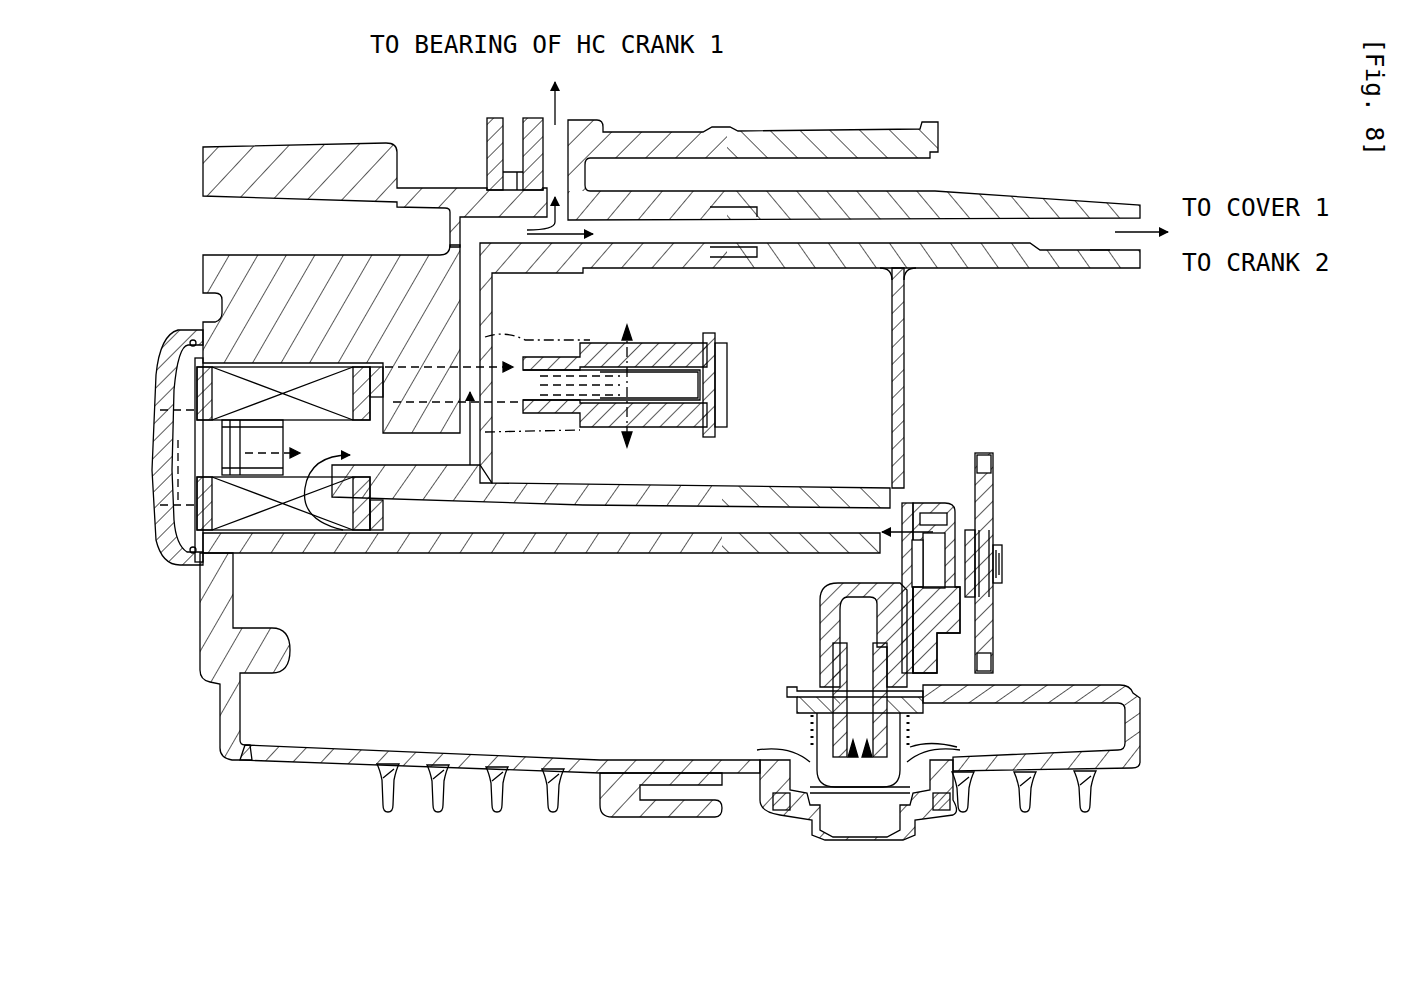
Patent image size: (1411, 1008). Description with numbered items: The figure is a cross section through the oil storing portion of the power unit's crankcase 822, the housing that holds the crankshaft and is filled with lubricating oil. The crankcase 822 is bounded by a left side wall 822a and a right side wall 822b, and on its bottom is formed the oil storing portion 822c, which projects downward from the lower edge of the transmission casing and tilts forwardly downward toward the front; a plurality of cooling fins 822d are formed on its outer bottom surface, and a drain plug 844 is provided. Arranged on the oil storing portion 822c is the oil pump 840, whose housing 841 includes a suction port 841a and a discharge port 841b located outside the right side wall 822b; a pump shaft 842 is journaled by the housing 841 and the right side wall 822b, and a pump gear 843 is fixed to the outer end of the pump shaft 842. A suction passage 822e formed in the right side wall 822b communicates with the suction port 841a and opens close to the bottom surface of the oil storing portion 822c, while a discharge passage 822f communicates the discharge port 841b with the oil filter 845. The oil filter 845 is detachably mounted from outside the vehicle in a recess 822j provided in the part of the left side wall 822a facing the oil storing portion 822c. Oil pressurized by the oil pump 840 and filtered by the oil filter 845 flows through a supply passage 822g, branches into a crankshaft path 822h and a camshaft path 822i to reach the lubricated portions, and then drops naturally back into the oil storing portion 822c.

The crankcase 822 is at (205, 724).
The left side wall 822a is at (199, 607).
The right side wall 822b is at (908, 408).
The oil storing portion 822c is at (658, 737).
The cooling fins 822d is at (395, 793).
The suction passage 822e is at (862, 620).
The discharge passage 822f is at (790, 525).
The supply passage 822g is at (478, 292).
The crankshaft path 822h is at (563, 123).
The camshaft path 822i is at (1096, 252).
The recess 822j is at (290, 532).
The oil pump 840 is at (1022, 529).
The housing 841 is at (940, 500).
The suction port 841a is at (942, 607).
The discharge port 841b is at (924, 513).
The pump shaft 842 is at (1003, 567).
The pump gear 843 is at (993, 620).
The drain plug 844 is at (880, 840).
The oil filter 845 is at (152, 412).